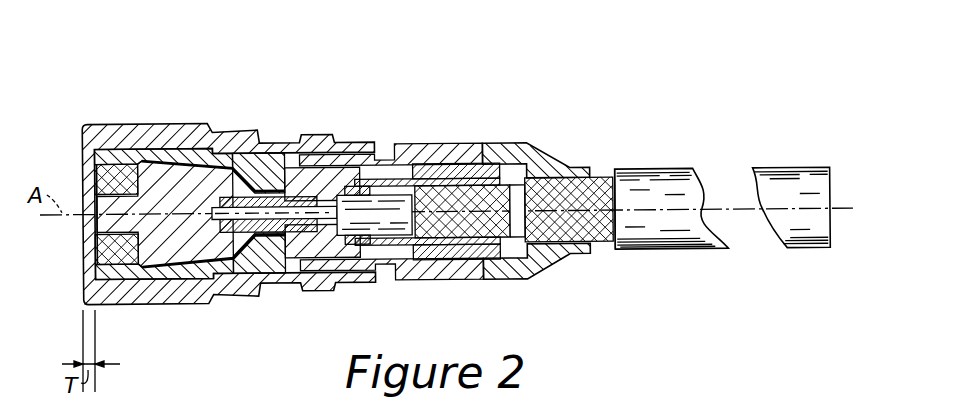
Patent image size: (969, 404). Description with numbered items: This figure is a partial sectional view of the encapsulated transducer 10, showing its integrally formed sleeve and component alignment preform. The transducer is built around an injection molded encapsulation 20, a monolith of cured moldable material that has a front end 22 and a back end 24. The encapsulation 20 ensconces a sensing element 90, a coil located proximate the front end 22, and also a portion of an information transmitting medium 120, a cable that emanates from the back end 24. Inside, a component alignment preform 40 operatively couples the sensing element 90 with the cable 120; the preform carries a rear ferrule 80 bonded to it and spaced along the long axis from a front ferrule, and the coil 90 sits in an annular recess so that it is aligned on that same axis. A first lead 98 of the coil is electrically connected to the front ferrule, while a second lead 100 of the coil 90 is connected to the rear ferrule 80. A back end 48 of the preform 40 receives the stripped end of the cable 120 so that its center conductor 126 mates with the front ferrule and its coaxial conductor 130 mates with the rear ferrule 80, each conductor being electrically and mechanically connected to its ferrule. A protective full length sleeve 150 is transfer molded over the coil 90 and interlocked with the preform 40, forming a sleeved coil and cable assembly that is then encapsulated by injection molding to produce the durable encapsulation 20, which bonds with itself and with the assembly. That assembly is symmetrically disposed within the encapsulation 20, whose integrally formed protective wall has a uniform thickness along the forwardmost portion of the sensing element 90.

The encapsulated transducer 10 is at (628, 86).
The injection molded encapsulation 20 is at (435, 147).
The front end 22 is at (90, 157).
The back end 24 is at (580, 253).
The component alignment preform 40 is at (328, 170).
The back end of the component alignment preform 48 is at (523, 147).
The rear ferrule 80 is at (457, 173).
The sensing element 90 is at (97, 161).
The first lead 98 is at (250, 179).
The second lead 100 is at (357, 265).
The information transmitting medium 120 is at (740, 152).
The center conductor 126 is at (267, 218).
The coaxial conductor 130 is at (457, 199).
The protective sleeve 150 is at (113, 151).